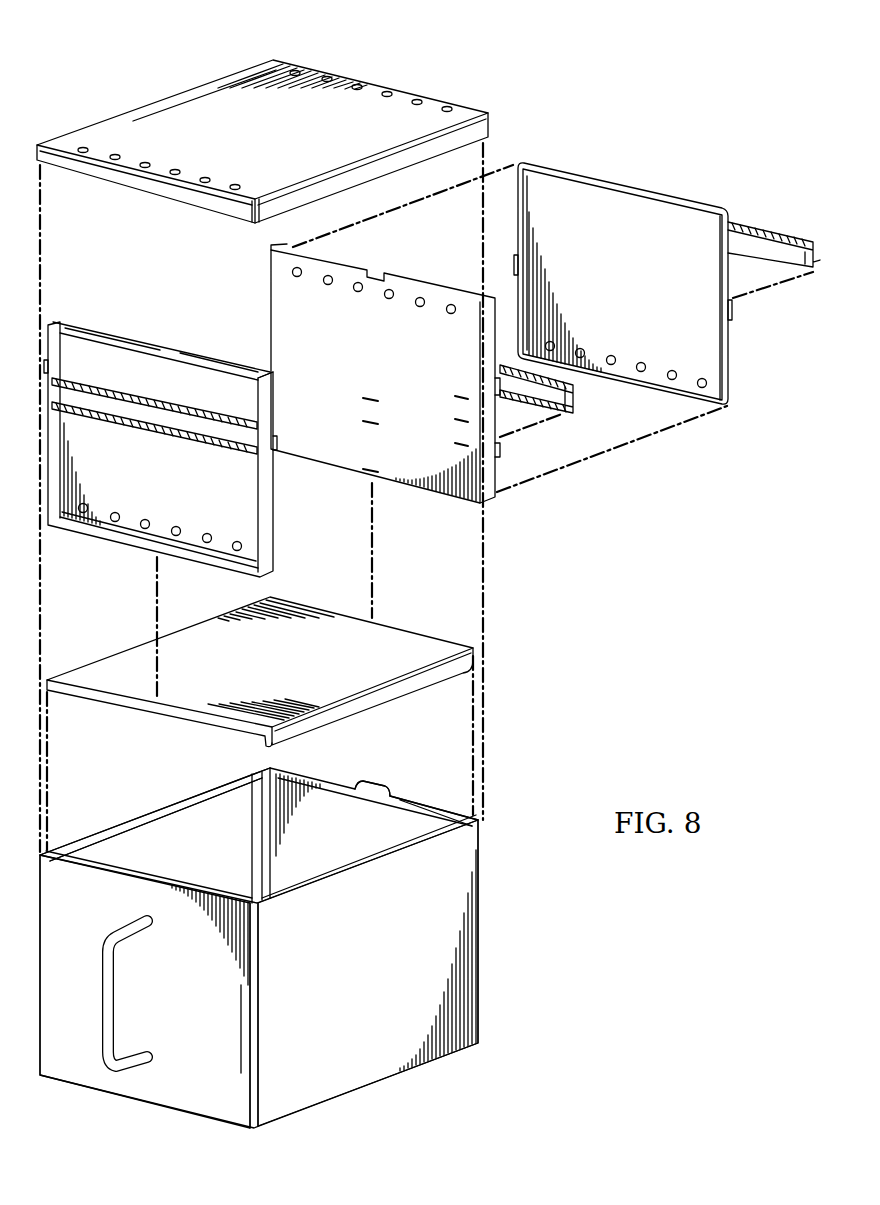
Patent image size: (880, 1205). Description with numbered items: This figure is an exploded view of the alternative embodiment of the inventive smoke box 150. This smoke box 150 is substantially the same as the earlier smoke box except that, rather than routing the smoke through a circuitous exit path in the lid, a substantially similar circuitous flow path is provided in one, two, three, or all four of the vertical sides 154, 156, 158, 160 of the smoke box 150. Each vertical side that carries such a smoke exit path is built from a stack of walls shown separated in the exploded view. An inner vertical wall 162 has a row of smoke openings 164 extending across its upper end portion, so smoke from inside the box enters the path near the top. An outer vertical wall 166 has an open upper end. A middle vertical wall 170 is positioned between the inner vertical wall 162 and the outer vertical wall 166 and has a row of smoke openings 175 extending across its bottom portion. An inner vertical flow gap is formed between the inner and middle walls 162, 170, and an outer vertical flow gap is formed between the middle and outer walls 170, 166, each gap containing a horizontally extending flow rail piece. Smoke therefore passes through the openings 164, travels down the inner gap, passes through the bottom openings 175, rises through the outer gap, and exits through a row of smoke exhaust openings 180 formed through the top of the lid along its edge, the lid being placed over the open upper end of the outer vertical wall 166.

The smoke box 150 is at (131, 66).
The vertical side 154 is at (383, 978).
The vertical side 156 is at (155, 822).
The vertical side 158 is at (203, 1008).
The vertical side 160 is at (415, 820).
The inner vertical wall 162 is at (358, 391).
The smoke openings 164 is at (292, 273).
The outer vertical wall 166 is at (345, 800).
The middle vertical wall 170 is at (623, 281).
The smoke openings 175 is at (640, 372).
The smoke exhaust openings 180 is at (175, 170).